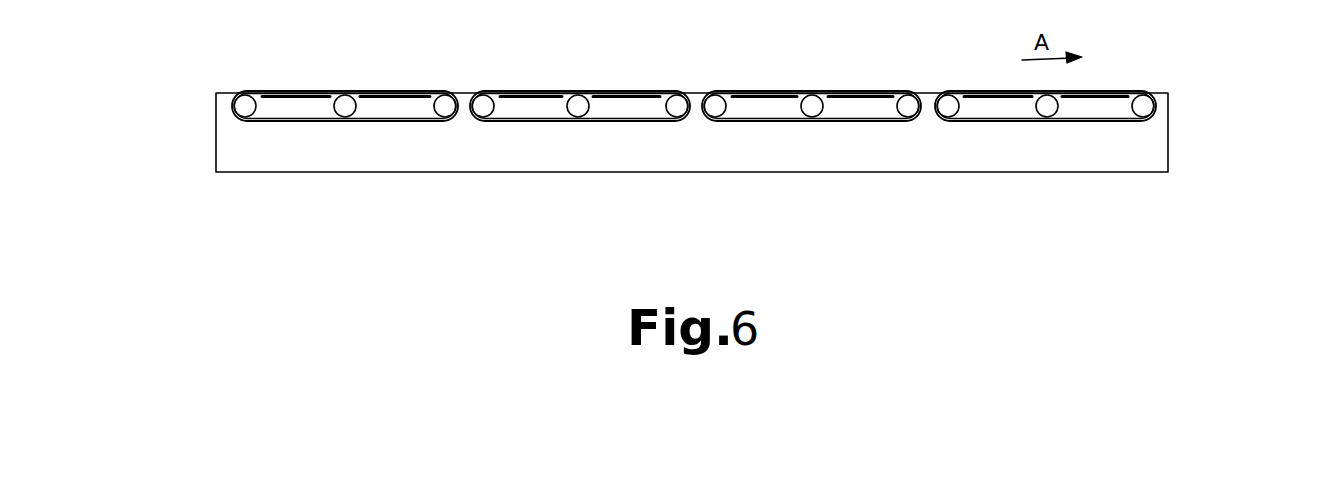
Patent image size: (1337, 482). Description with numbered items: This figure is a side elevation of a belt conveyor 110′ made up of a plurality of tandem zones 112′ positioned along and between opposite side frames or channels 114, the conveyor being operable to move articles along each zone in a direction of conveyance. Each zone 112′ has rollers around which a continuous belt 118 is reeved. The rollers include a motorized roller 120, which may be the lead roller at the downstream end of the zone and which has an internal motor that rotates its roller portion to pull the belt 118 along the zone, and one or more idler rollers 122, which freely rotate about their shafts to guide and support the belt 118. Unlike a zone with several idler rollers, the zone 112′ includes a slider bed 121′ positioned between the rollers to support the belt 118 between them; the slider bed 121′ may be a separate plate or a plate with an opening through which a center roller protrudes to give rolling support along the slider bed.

The belt conveyor 110′ is at (450, 250).
The zone 112′ is at (584, 62).
The side frame 114 is at (785, 162).
The continuous belt 118 is at (845, 91).
The motorized roller 120 is at (445, 95).
The slider bed 121′ is at (523, 97).
The idler roller 122 is at (244, 108).